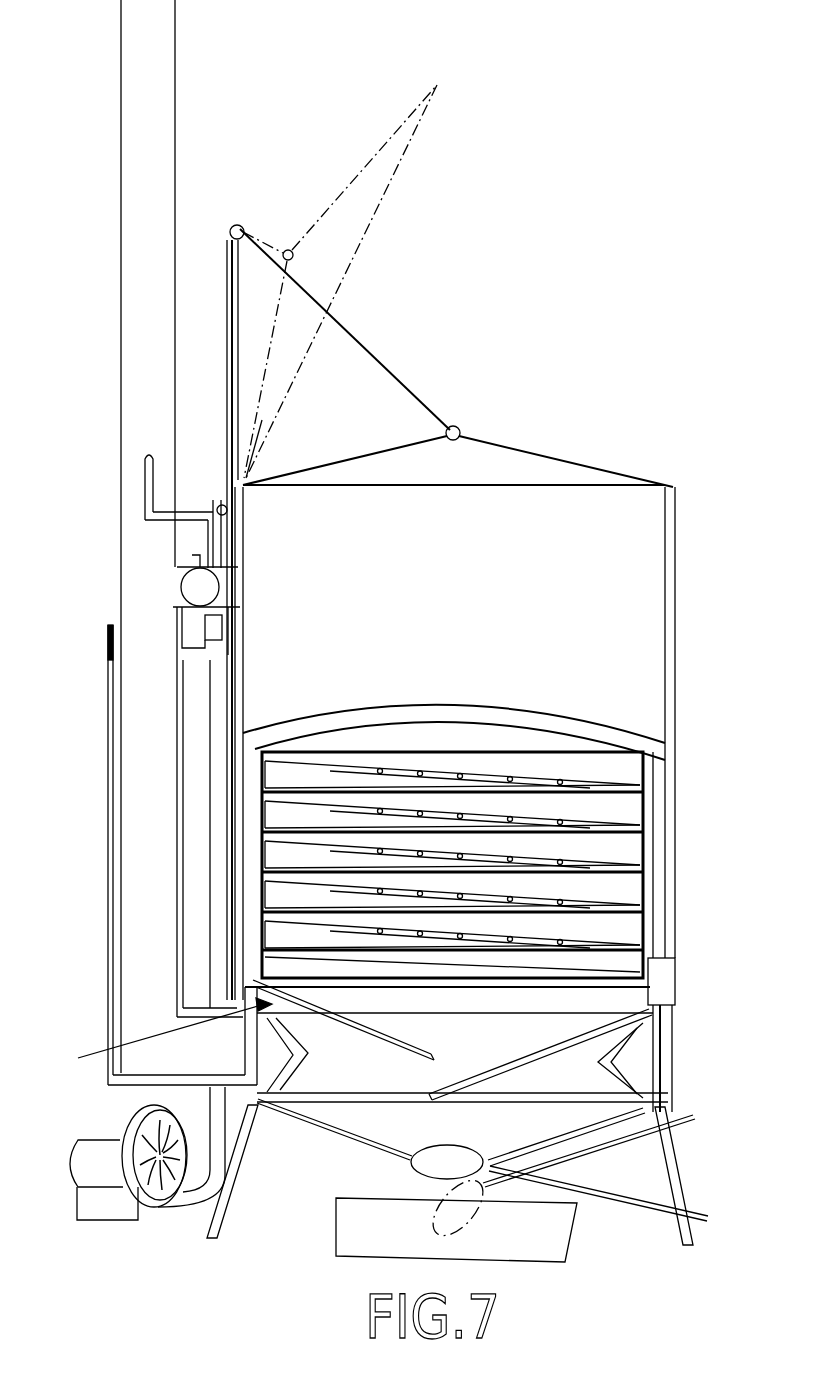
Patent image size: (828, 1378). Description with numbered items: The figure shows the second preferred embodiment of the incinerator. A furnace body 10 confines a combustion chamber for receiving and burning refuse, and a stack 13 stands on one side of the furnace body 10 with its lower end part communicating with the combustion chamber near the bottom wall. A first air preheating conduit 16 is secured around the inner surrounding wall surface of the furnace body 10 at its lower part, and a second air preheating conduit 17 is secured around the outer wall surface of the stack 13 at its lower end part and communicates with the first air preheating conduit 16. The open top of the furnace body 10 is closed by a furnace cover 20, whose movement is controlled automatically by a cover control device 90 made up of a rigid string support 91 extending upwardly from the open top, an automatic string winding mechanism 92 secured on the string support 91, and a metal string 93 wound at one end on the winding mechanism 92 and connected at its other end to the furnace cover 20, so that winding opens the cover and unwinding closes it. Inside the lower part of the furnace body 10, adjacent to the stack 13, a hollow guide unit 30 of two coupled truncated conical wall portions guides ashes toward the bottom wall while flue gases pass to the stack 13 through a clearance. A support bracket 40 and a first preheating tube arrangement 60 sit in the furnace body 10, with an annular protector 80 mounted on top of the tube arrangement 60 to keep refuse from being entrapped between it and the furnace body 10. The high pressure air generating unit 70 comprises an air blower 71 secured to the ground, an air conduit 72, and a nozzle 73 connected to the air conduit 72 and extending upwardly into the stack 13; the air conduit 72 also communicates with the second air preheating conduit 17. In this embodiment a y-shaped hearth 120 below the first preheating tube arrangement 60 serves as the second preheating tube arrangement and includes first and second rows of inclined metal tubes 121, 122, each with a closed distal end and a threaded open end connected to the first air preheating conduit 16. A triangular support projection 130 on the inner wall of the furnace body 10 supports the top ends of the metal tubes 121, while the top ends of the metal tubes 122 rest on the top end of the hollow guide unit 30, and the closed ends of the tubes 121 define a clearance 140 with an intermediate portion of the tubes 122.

The furnace body 10 is at (674, 692).
The stack 13 is at (121, 216).
The first air preheating conduit 16 is at (673, 1050).
The second air preheating conduit 17 is at (110, 800).
The furnace cover 20 is at (536, 452).
The hollow guide unit 30 is at (746, 1087).
The support bracket 40 is at (261, 748).
The first preheating tube arrangement 60 is at (349, 750).
The high pressure air generating unit 70 is at (137, 1218).
The air blower 71 is at (83, 1160).
The air conduit 72 is at (218, 725).
The nozzle 73 is at (143, 452).
The annular protector 80 is at (526, 714).
The cover control device 90 is at (232, 226).
The rigid string support 91 is at (238, 282).
The automatic string winding mechanism 92 is at (220, 505).
The metal string 93 is at (354, 336).
The y-shaped hearth 120 is at (437, 1072).
The first row of inclined metal tubes 121 is at (340, 1016).
The second row of inclined metal tubes 122 is at (510, 1066).
The triangular support projection 130 is at (80, 1093).
The clearance 140 is at (400, 1113).